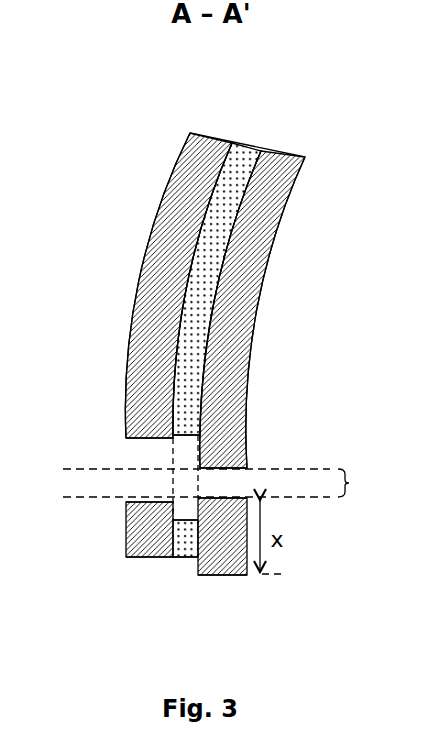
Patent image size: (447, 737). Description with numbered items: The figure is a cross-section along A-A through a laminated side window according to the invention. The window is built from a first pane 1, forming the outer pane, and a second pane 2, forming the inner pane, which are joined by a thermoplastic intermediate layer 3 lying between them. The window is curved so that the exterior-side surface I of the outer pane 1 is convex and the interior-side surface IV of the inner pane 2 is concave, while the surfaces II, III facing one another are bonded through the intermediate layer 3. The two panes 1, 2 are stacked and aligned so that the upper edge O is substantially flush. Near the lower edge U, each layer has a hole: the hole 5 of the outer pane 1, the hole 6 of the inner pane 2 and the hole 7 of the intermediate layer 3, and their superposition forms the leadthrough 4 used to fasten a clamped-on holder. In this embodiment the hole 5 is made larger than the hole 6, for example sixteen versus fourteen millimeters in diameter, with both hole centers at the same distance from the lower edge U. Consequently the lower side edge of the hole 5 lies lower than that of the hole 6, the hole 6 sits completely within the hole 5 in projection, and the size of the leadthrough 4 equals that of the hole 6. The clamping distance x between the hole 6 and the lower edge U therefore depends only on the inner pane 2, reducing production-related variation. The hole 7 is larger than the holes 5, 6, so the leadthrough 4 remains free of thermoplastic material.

The first pane 1 is at (200, 155).
The second pane 2 is at (292, 170).
The thermoplastic intermediate layer 3 is at (242, 163).
The leadthrough 4 is at (215, 483).
The hole of the outer pane 5 is at (150, 480).
The hole of the inner pane 6 is at (229, 480).
The hole of the intermediate layer 7 is at (190, 453).
The exterior-side surface I is at (141, 247).
The facing surface of the outer pane II is at (201, 222).
The facing surface of the inner pane III is at (260, 189).
The interior-side surface IV is at (281, 245).
The upper edge O is at (239, 118).
The lower edge U is at (176, 594).